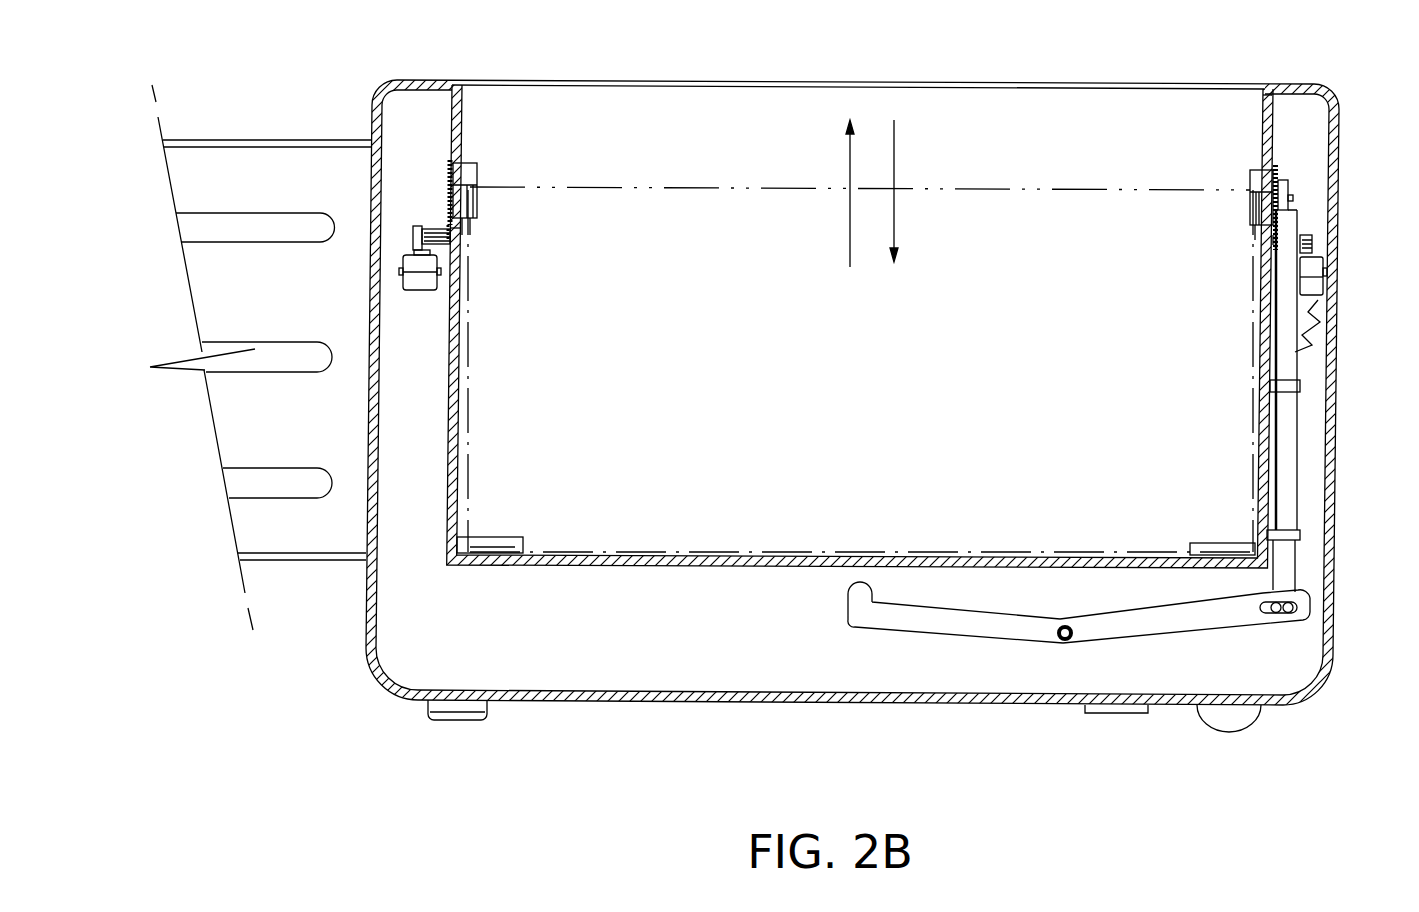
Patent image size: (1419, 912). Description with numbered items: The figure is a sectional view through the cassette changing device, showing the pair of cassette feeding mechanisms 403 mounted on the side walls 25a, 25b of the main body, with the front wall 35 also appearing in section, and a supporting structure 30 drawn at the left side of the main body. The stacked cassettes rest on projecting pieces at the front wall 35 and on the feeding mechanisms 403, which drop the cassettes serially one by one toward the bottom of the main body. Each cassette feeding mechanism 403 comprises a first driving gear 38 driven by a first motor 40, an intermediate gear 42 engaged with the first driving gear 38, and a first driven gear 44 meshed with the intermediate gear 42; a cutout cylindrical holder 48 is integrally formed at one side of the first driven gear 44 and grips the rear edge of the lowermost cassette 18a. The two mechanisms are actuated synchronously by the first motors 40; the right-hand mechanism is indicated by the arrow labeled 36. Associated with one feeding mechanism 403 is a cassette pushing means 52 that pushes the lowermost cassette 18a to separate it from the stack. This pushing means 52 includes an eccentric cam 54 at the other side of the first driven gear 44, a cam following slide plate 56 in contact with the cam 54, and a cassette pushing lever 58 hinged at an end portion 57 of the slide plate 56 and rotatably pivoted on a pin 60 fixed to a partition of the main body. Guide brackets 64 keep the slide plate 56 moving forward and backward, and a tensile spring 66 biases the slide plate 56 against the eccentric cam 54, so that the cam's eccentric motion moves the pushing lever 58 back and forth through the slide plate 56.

The lowermost cassette 18a is at (945, 188).
The side wall 25a is at (467, 133).
The side wall 25b is at (1278, 132).
The mounting bracket 30 is at (340, 568).
The front wall 35 is at (757, 702).
The rack 36 is at (1237, 168).
The first driving gear 38 is at (412, 240).
The first motor 40 is at (413, 285).
The intermediate gear 42 is at (440, 253).
The first driven gear 44 is at (448, 172).
The cutout cylindrical holder 48 is at (473, 228).
The cassette pushing means 52 is at (1165, 640).
The eccentric cam 54 is at (1285, 188).
The cam following slide plate 56 is at (1290, 490).
The end portion 57 is at (1283, 560).
The cassette pushing lever 58 is at (952, 637).
The pin 60 is at (1060, 643).
The guide bracket 64 is at (1353, 392).
The tensile spring 66 is at (1313, 323).
The cassette feeding mechanism 403 is at (490, 165).